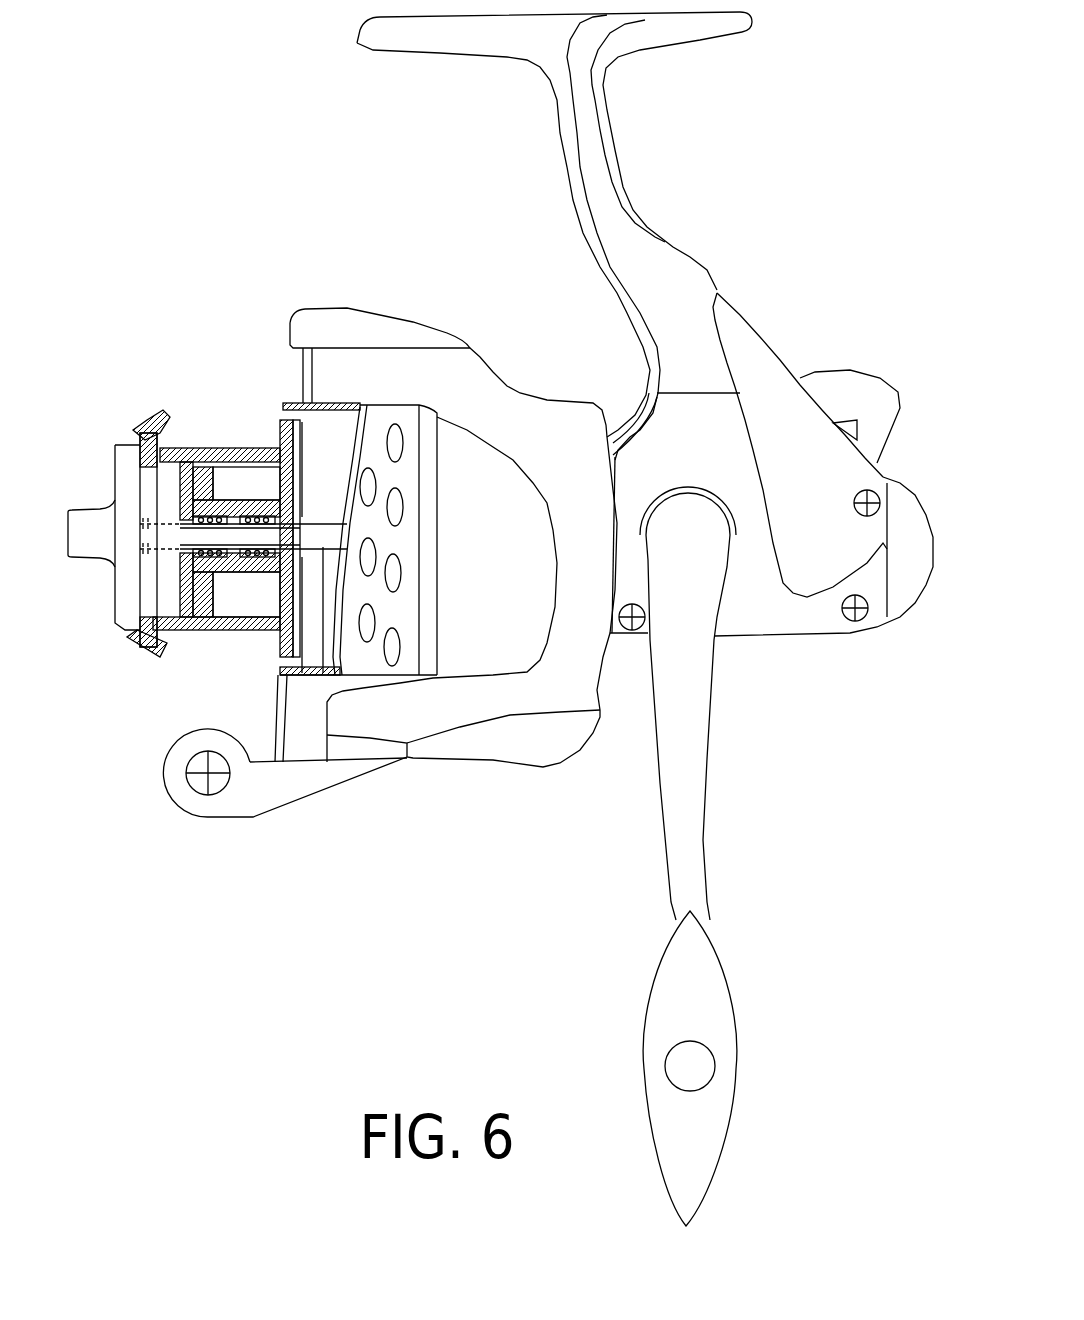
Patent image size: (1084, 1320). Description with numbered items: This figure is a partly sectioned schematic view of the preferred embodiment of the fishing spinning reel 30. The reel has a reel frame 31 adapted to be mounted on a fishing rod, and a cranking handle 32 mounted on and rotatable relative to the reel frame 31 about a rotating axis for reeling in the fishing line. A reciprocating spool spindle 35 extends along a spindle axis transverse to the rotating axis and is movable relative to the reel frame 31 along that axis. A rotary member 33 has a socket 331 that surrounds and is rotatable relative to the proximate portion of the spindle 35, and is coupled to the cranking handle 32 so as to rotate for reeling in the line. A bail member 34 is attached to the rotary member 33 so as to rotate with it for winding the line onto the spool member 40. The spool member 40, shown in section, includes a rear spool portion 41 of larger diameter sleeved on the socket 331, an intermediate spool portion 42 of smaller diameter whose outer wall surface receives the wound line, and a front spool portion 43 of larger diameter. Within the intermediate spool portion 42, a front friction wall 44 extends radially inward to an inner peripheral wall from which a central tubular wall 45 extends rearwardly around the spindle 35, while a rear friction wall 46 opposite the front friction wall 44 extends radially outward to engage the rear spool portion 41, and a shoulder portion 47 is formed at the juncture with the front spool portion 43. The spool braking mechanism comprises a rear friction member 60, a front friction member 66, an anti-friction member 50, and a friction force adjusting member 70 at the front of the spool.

The fishing spinning reel 30 is at (741, 289).
The reel frame 31 is at (750, 328).
The cranking handle 32 is at (705, 757).
The rotary member 33 is at (573, 400).
The socket 331 is at (485, 450).
The bail member 34 is at (205, 820).
The reciprocating spool spindle 35 is at (312, 677).
The spool member 40 is at (160, 390).
The rear spool portion 41 is at (380, 413).
The intermediate spool portion 42 is at (196, 448).
The front spool portion 43 is at (147, 418).
The front friction wall 44 is at (225, 455).
The central tubular wall 45 is at (240, 455).
The rear friction wall 46 is at (265, 420).
The shoulder portion 47 is at (113, 447).
The anti-friction member 50 is at (205, 588).
The rear friction member 60 is at (320, 457).
The front friction member 66 is at (183, 630).
The friction force adjusting member 70 is at (72, 488).